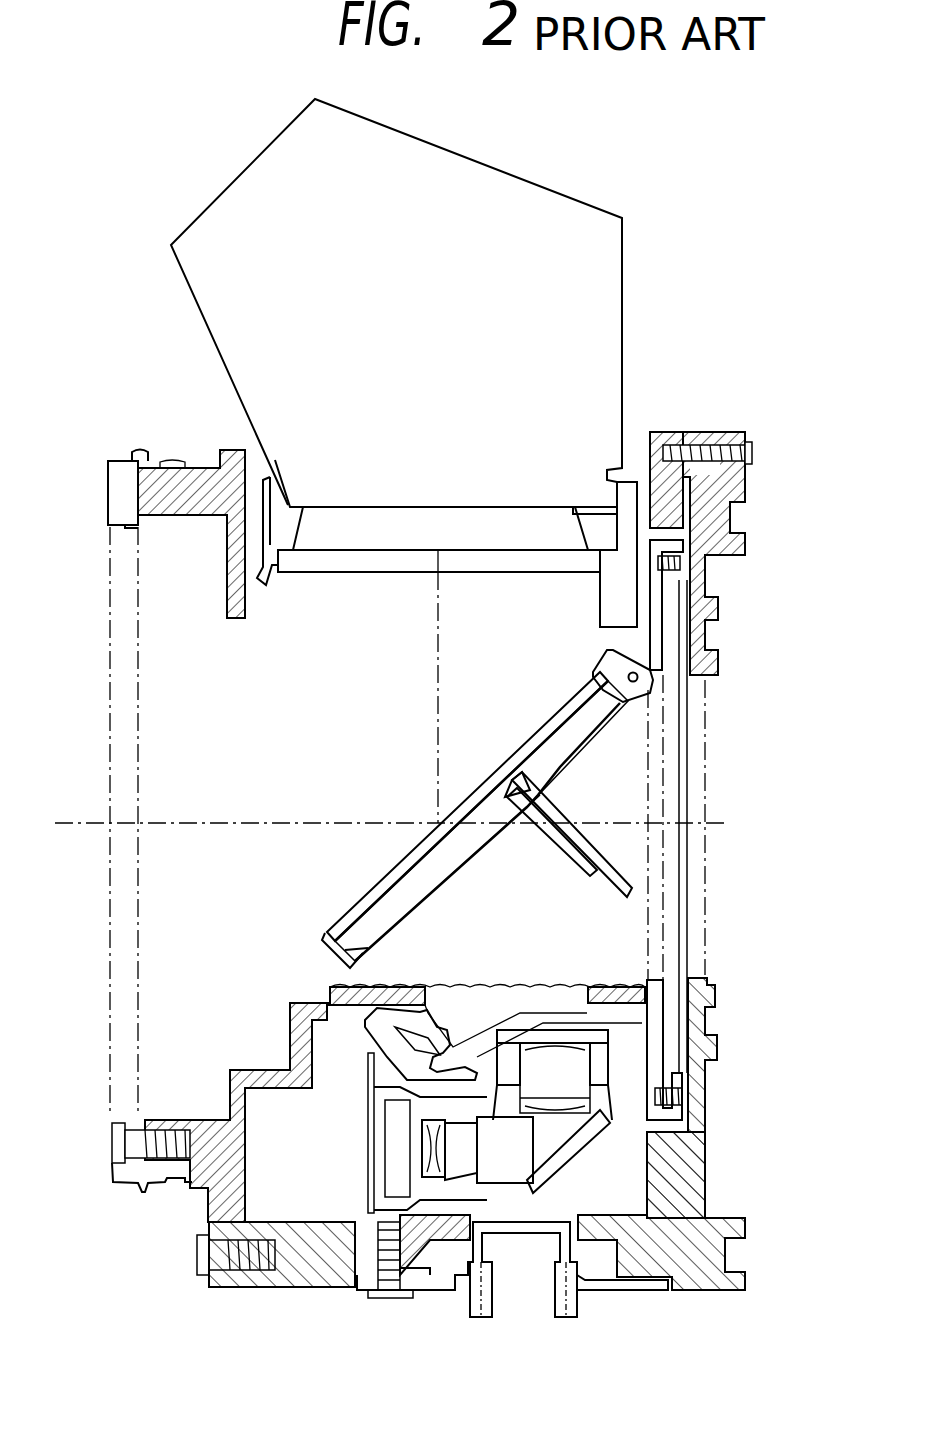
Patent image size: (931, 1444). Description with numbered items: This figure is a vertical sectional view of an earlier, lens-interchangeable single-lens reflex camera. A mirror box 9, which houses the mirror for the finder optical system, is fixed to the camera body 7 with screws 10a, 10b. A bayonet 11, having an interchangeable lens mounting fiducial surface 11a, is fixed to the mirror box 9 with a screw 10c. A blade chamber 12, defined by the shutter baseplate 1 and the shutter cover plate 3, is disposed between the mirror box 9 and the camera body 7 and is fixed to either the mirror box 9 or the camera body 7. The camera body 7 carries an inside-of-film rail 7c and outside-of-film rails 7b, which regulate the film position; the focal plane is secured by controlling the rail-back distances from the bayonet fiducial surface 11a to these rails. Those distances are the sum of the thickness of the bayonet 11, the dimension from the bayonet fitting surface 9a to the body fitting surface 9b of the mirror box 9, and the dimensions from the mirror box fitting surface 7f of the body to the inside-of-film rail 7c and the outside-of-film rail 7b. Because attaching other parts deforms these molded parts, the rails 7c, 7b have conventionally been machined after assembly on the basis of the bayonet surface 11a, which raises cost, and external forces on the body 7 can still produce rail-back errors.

The shutter baseplate 1 is at (655, 980).
The cover plate 3 is at (690, 978).
The camera body 7 is at (700, 1168).
The outside-of-film rails 7b is at (720, 598).
The inside-of-film rail 7c is at (720, 655).
The mirror box fitting surface 7f is at (735, 432).
The mirror box 9 is at (673, 432).
The bayonet fitting surface 9a is at (138, 490).
The body fitting surface 9b is at (705, 432).
The screw 10a is at (755, 453).
The screw 10b is at (197, 1265).
The screw 10c is at (112, 1145).
The bayonet 11 is at (112, 487).
The interchangeable lens mounting fiducial surface 11a is at (108, 514).
The blade chamber 12 is at (670, 978).